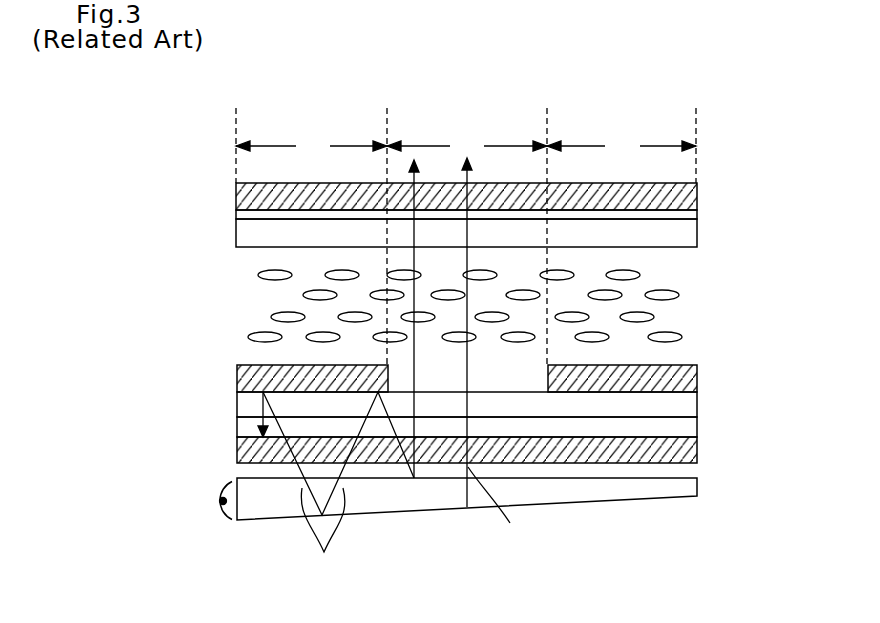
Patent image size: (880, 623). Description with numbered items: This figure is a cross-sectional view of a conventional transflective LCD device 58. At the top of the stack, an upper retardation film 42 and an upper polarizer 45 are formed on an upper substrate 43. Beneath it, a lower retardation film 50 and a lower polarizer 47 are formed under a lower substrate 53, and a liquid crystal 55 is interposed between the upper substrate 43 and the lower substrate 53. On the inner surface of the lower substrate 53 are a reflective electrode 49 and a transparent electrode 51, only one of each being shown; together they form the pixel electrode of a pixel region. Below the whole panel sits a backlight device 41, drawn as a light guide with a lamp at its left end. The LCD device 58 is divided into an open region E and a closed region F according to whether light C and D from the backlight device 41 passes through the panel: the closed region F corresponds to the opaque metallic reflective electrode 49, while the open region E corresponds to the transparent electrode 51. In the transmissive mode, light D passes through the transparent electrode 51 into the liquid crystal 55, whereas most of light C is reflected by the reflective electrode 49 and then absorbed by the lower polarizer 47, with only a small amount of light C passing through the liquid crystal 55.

The transflective LCD device 58 is at (202, 275).
The upper polarizer 45 is at (697, 192).
The upper retardation film 42 is at (697, 213).
The upper substrate 43 is at (697, 242).
The liquid crystal 55 is at (673, 290).
The reflective electrode 49 is at (683, 363).
The transparent electrode 51 is at (400, 364).
The lower substrate 53 is at (697, 403).
The lower retardation film 50 is at (697, 422).
The lower polarizer 47 is at (697, 446).
The backlight device 41 is at (697, 487).